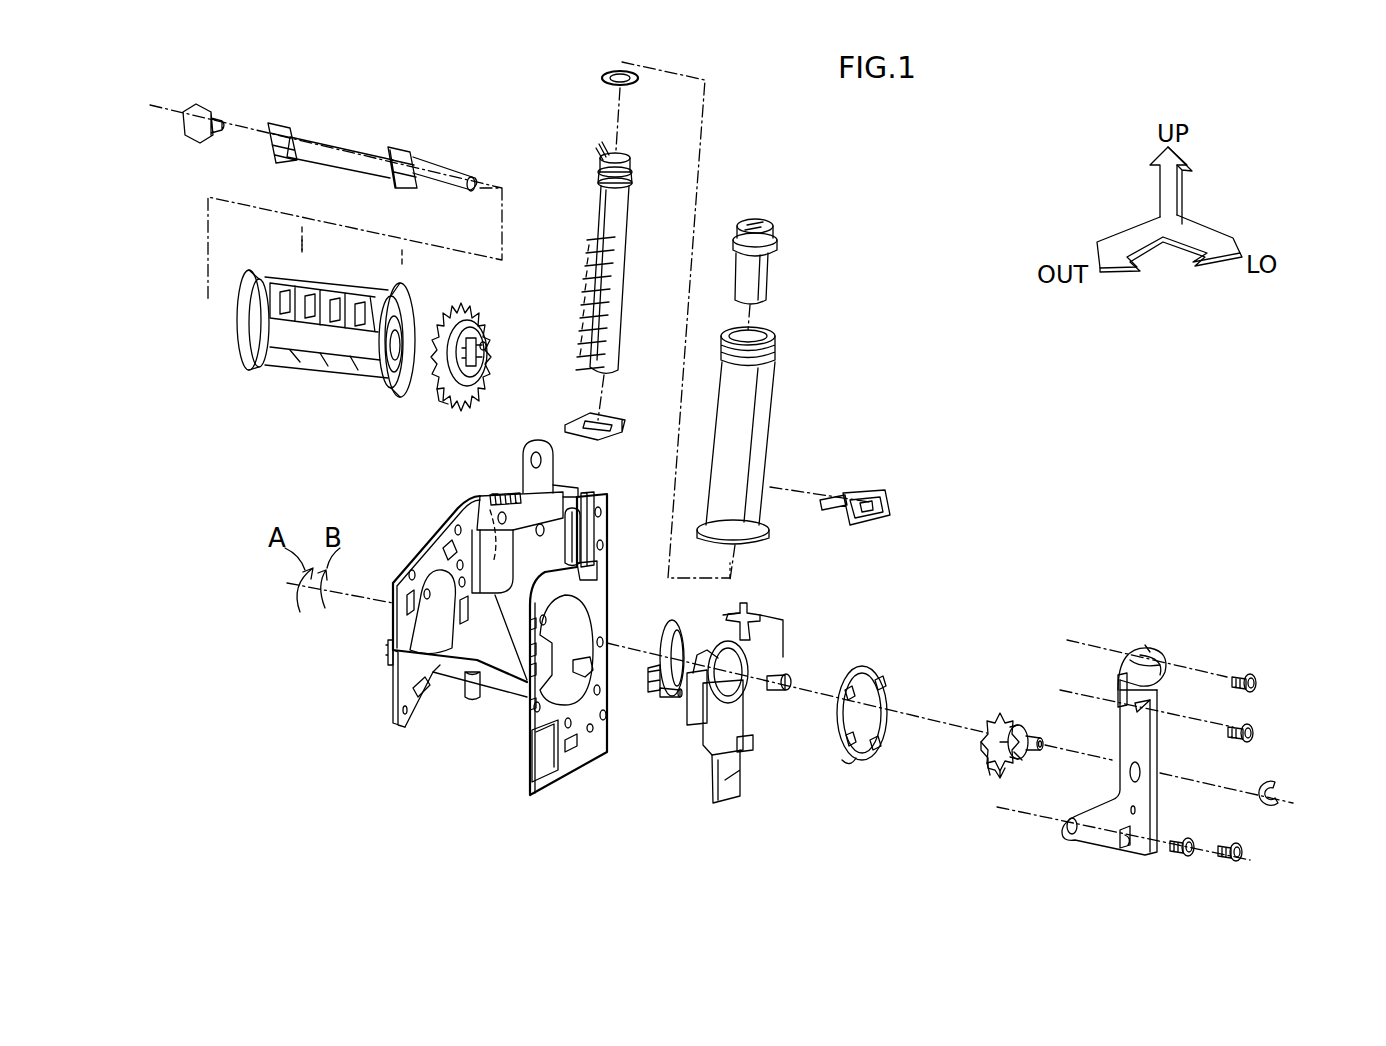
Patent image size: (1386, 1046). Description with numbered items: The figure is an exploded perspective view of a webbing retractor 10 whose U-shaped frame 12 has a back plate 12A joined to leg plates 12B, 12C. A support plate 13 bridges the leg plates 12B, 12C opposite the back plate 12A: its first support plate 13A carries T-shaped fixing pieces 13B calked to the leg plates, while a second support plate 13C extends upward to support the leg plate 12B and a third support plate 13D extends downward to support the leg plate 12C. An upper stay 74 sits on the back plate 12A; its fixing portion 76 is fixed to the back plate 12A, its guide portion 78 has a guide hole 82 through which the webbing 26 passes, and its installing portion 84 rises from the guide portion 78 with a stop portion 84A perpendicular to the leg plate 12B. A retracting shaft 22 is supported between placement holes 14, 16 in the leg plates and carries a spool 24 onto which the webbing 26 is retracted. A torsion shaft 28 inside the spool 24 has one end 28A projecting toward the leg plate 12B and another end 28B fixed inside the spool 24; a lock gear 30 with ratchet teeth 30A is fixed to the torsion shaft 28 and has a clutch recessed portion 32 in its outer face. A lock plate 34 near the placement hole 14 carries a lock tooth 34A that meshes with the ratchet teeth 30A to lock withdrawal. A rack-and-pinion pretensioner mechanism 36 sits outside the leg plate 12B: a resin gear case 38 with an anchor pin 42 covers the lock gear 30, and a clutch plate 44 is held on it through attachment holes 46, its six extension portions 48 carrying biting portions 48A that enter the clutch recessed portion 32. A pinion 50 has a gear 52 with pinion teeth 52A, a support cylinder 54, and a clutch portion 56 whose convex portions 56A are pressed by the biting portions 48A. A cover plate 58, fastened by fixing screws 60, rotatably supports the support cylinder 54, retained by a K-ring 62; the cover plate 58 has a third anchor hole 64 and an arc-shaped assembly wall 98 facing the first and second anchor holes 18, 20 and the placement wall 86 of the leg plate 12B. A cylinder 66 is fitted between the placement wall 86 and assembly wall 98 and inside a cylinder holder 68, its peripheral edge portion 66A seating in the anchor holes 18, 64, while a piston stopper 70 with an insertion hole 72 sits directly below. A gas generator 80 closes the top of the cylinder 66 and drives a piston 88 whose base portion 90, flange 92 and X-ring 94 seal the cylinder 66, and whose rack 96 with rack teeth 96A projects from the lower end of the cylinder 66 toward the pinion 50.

The webbing retractor 10 is at (918, 185).
The frame 12 is at (440, 508).
The back plate 12A is at (518, 720).
The leg plate 12B is at (565, 765).
The leg plate 12C is at (435, 552).
The support plate 13 is at (430, 656).
The first support plate 13A is at (445, 695).
The fixing pieces 13B is at (388, 648).
The second support plate 13C is at (475, 700).
The third support plate 13D is at (398, 702).
The placement hole 14 is at (585, 643).
The placement hole 16 is at (425, 592).
The first anchor hole 18 is at (592, 548).
The second anchor hole 20 is at (595, 578).
The retracting shaft 22 is at (363, 128).
The spool 24 is at (315, 378).
The webbing 26 is at (302, 247).
The torsion shaft 28 is at (365, 140).
The one end 28A is at (455, 170).
The another end 28B is at (278, 122).
The lock gear 30 is at (487, 318).
The ratchet teeth 30A is at (440, 398).
The clutch recessed portion 32 is at (486, 346).
The lock plate 34 is at (672, 640).
The lock tooth 34A is at (662, 698).
The pretensioner mechanism 36 is at (962, 430).
The gear case 38 is at (752, 699).
The anchor pin 42 is at (765, 640).
The clutch plate 44 is at (868, 648).
The attachment holes 46 is at (846, 758).
The extension portions 48 is at (882, 685).
The biting portions 48A is at (878, 738).
The pinion 50 is at (1000, 685).
The gear 52 is at (1020, 725).
The pinion teeth 52A is at (1022, 760).
The support cylinder 54 is at (1042, 738).
The clutch portion 56 is at (983, 722).
The convex portions 56A is at (985, 765).
The cover plate 58 is at (1160, 760).
The fixing screws 60 is at (1258, 733).
The K-ring 62 is at (1275, 805).
The third anchor hole 64 is at (1160, 693).
The cylinder 66 is at (770, 375).
The peripheral edge portion 66A is at (770, 538).
The cylinder holder 68 is at (862, 490).
The piston stopper 70 is at (578, 430).
The insertion hole 72 is at (606, 418).
The upper stay 74 is at (495, 494).
The fixing portion 76 is at (499, 595).
The guide portion 78 is at (512, 494).
The gas generator 80 is at (770, 258).
The guide hole 82 is at (492, 496).
The installing portion 84 is at (523, 445).
The stop portion 84A is at (578, 485).
The placement wall 86 is at (565, 548).
The piston 88 is at (598, 150).
The base portion 90 is at (635, 176).
The flange 92 is at (598, 178).
The X-ring 94 is at (602, 78).
The rack 96 is at (598, 212).
The rack teeth 96A is at (602, 265).
The assembly wall 98 is at (1165, 660).